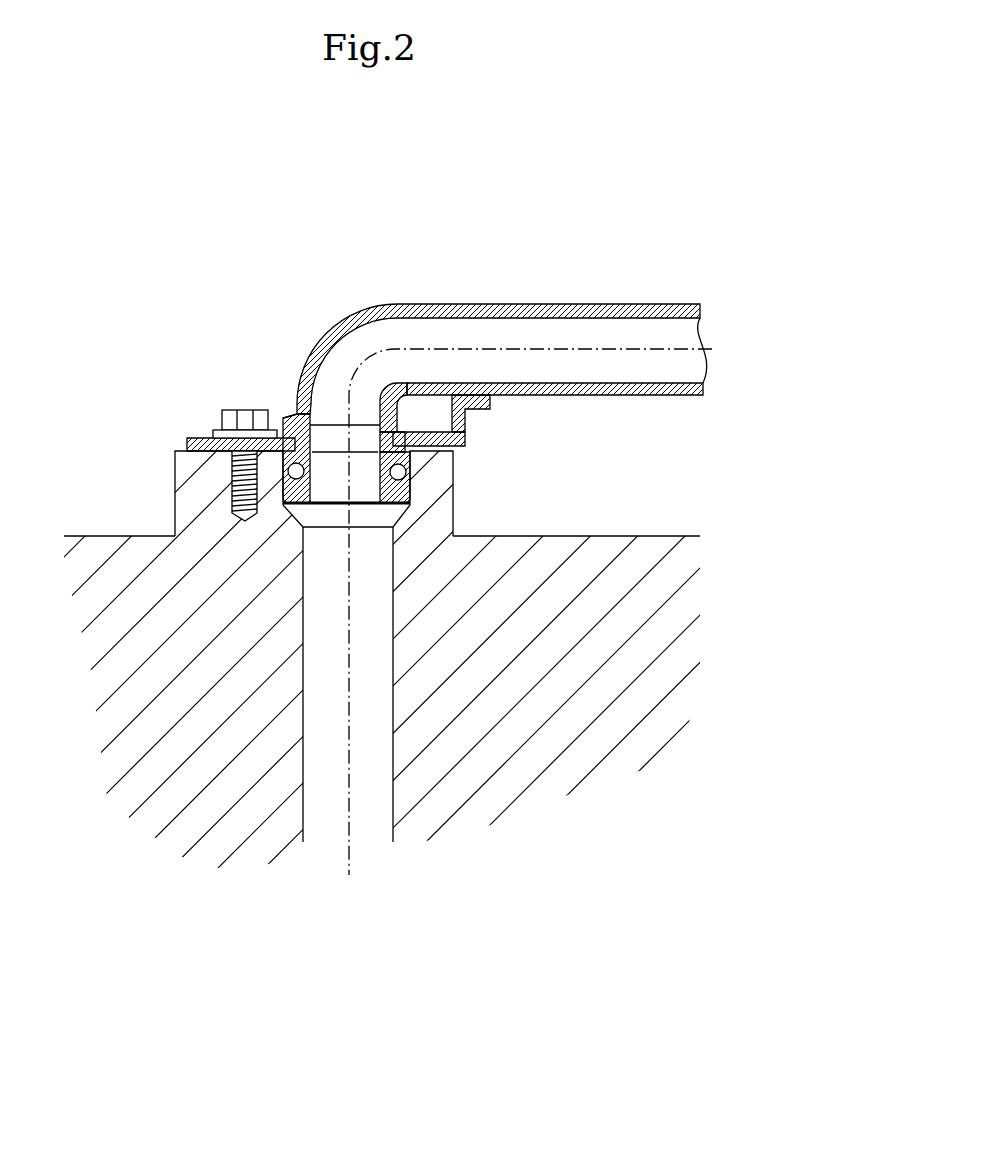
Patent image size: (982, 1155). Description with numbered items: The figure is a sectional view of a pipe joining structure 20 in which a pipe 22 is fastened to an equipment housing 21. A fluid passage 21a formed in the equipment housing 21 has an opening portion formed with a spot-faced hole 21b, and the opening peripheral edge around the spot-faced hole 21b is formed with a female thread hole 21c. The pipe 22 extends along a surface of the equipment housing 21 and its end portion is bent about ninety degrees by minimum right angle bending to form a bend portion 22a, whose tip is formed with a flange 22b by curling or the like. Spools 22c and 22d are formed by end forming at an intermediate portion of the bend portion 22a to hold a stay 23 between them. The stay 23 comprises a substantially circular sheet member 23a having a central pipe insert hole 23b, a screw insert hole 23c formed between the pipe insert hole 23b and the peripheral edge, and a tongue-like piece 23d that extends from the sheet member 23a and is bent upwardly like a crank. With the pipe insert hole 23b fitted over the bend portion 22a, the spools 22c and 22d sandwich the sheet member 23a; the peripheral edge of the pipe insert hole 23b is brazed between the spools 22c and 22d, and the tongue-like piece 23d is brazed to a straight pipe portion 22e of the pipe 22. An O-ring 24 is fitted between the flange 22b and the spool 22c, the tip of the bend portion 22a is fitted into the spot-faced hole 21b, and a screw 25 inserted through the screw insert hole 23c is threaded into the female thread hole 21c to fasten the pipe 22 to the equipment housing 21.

The pipe joining structure 20 is at (218, 355).
The equipment housing 21 is at (629, 527).
The fluid passage 21a is at (393, 765).
The spot-faced hole 21b is at (322, 540).
The female thread hole 21c is at (228, 480).
The pipe 22 is at (568, 305).
The bend portion 22a is at (299, 400).
The flange 22b is at (413, 494).
The spool 22c is at (413, 452).
The spool 22d is at (403, 428).
The straight pipe portion 22e is at (598, 396).
The stay 23 is at (207, 438).
The sheet member 23a is at (432, 434).
The pipe insert hole 23b is at (315, 417).
The screw insert hole 23c is at (223, 437).
The tongue-like piece 23d is at (478, 399).
The O-ring 24 is at (412, 474).
The screw 25 is at (243, 408).